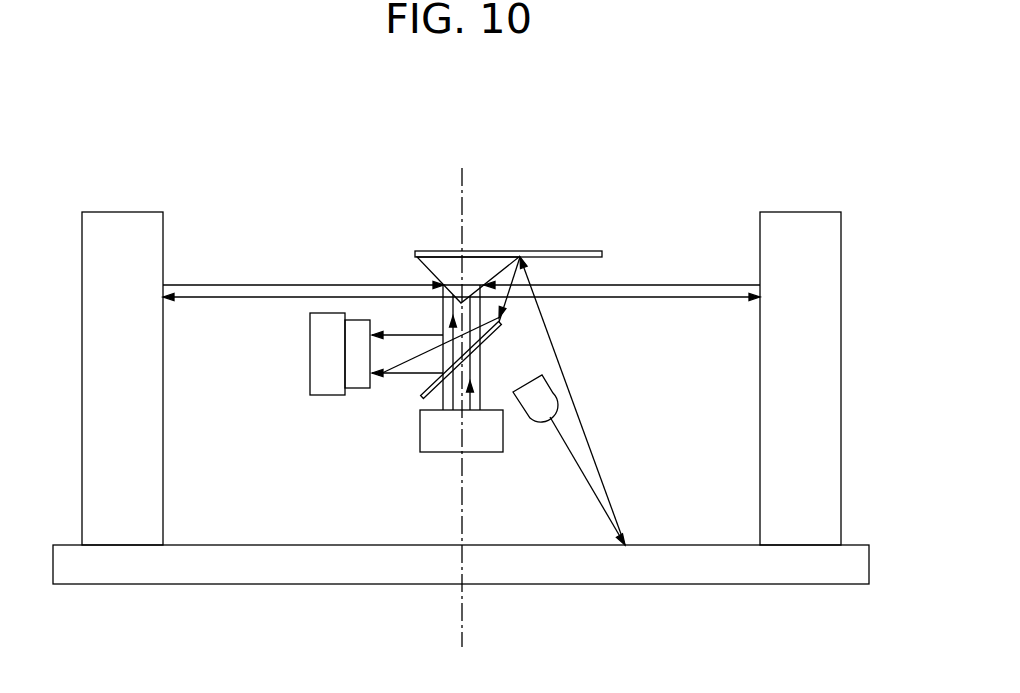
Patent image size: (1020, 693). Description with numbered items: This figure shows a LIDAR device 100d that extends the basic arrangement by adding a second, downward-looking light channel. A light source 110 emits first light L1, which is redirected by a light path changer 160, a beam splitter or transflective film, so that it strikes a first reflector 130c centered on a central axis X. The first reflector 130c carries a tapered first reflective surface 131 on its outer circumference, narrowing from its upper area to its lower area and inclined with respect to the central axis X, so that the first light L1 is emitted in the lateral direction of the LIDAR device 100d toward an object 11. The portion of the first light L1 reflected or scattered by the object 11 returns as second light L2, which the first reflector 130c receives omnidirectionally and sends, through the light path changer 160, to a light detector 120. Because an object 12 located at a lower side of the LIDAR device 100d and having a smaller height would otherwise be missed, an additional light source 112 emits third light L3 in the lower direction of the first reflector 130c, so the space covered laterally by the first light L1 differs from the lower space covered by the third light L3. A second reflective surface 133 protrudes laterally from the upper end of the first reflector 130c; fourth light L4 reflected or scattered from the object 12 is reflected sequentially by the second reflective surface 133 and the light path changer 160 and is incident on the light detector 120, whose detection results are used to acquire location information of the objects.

The LIDAR device 100d is at (762, 136).
The object 11 is at (123, 223).
The object 12 is at (695, 575).
The central axis X is at (461, 394).
The first reflector 130c is at (508, 230).
The first reflective surface 131 is at (468, 253).
The second reflective surface 133 is at (552, 253).
The first light L1 is at (653, 298).
The second light L2 is at (655, 283).
The third light L3 is at (592, 495).
The fourth light L4 is at (578, 413).
The light source 110 is at (438, 442).
The additional light source 112 is at (538, 418).
The light detector 120 is at (325, 388).
The light path changer 160 is at (426, 396).